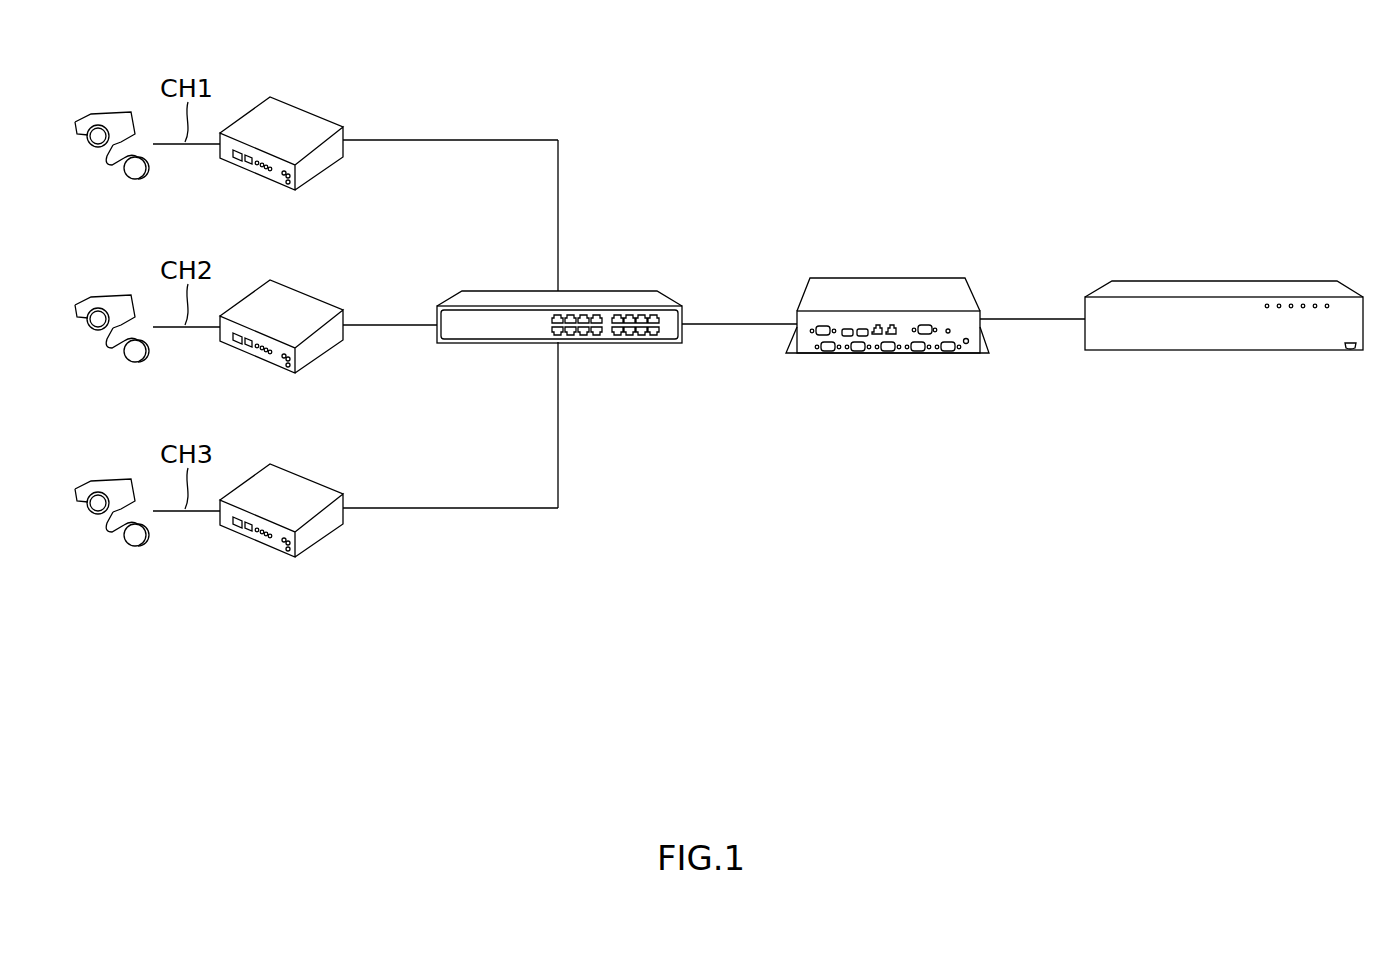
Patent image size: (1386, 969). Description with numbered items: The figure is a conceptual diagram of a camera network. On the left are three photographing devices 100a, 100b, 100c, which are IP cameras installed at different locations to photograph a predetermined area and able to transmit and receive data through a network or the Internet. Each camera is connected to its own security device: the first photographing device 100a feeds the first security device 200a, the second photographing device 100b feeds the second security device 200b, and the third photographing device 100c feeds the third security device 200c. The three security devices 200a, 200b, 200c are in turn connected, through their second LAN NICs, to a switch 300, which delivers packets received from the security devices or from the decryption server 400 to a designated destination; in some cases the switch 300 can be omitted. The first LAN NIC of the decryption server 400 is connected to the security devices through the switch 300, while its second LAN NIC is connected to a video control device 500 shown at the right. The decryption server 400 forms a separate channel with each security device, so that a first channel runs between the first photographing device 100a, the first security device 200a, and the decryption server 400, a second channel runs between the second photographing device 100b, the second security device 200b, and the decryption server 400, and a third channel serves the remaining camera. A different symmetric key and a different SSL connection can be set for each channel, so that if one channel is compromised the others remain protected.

The first photographing device 100a is at (110, 110).
The second photographing device 100b is at (112, 294).
The photographing device 100c is at (112, 478).
The first security device 200a is at (268, 93).
The second security device 200b is at (281, 289).
The security device 200c is at (281, 473).
The switch 300 is at (615, 290).
The decryption server 400 is at (887, 277).
The video control device 500 is at (1223, 280).